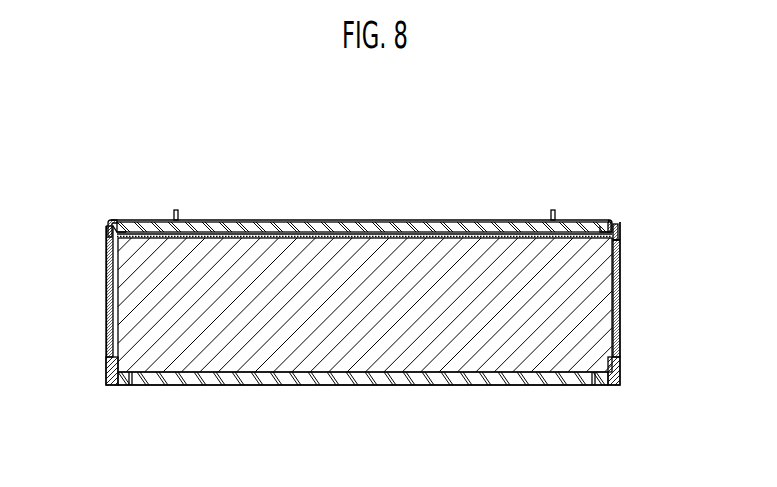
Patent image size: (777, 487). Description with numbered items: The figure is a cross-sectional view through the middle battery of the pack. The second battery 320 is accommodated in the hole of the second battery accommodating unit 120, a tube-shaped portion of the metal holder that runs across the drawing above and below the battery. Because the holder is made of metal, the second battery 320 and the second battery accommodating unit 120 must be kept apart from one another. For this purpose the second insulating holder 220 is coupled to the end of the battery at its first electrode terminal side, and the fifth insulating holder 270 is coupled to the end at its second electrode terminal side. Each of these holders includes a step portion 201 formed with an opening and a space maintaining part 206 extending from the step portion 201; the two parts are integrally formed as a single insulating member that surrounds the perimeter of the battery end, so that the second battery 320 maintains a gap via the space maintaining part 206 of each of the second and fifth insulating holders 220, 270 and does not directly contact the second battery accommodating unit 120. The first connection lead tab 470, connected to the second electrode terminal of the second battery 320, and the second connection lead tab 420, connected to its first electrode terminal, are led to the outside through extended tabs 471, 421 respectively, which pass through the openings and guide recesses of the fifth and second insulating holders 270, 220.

The second battery accommodating unit 120 is at (390, 220).
The second battery 320 is at (305, 278).
The extended tab 471 is at (149, 221).
The extended tab 421 is at (592, 220).
The space maintaining part 206 is at (600, 223).
The step portion 201 is at (618, 223).
The first connection lead tab 470 is at (106, 277).
The second connection lead tab 420 is at (620, 277).
The fifth insulating holder 270 is at (107, 372).
The second insulating holder 220 is at (619, 372).